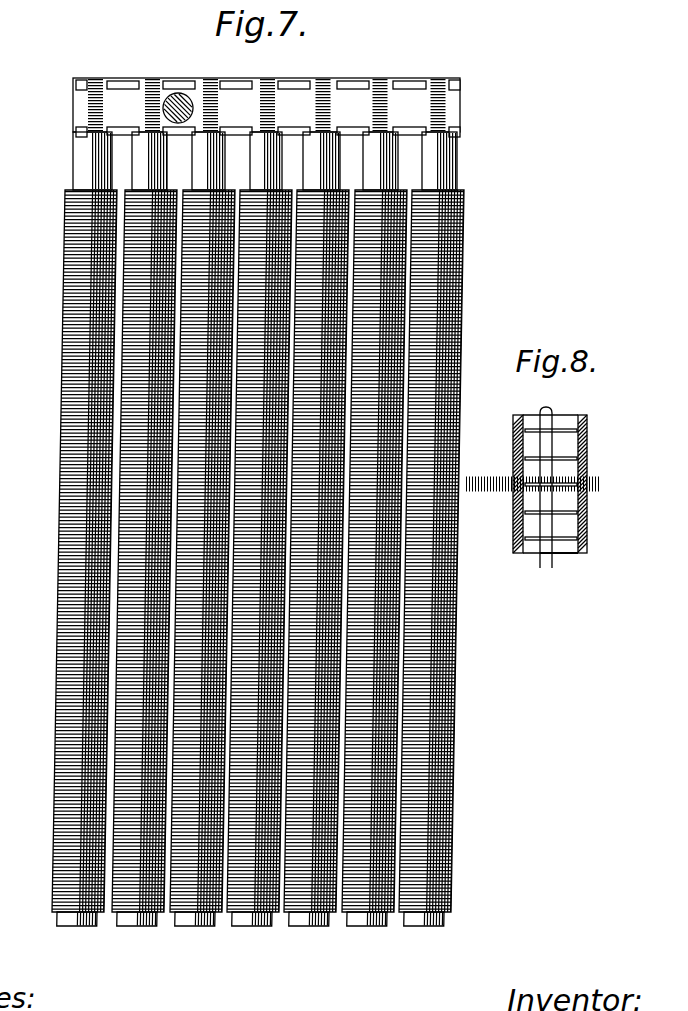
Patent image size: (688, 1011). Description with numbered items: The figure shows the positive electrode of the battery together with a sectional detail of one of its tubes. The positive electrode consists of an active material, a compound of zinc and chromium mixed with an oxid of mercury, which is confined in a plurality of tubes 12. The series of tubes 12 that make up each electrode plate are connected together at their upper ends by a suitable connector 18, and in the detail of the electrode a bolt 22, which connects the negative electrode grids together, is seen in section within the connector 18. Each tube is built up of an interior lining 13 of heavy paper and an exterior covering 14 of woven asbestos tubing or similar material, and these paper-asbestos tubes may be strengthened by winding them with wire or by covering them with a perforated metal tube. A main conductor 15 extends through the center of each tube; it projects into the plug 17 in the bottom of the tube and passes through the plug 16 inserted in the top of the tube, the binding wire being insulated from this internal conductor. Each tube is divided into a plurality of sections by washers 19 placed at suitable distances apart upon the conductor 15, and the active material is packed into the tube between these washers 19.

In FIG. 7, the tubes 12 is at (323, 688).
In FIG. 8, the tubes 12 is at (568, 554).
In FIG. 8, the interior lining 13 is at (560, 555).
In FIG. 8, the exterior covering 14 is at (588, 470).
In FIG. 8, the main conductor 15 is at (542, 568).
In FIG. 7, the plug 16 is at (451, 178).
In FIG. 7, the plug 17 is at (250, 926).
In FIG. 7, the connector 18 is at (358, 104).
In FIG. 8, the washers 19 is at (563, 513).
In FIG. 7, the bolt 22 is at (178, 103).